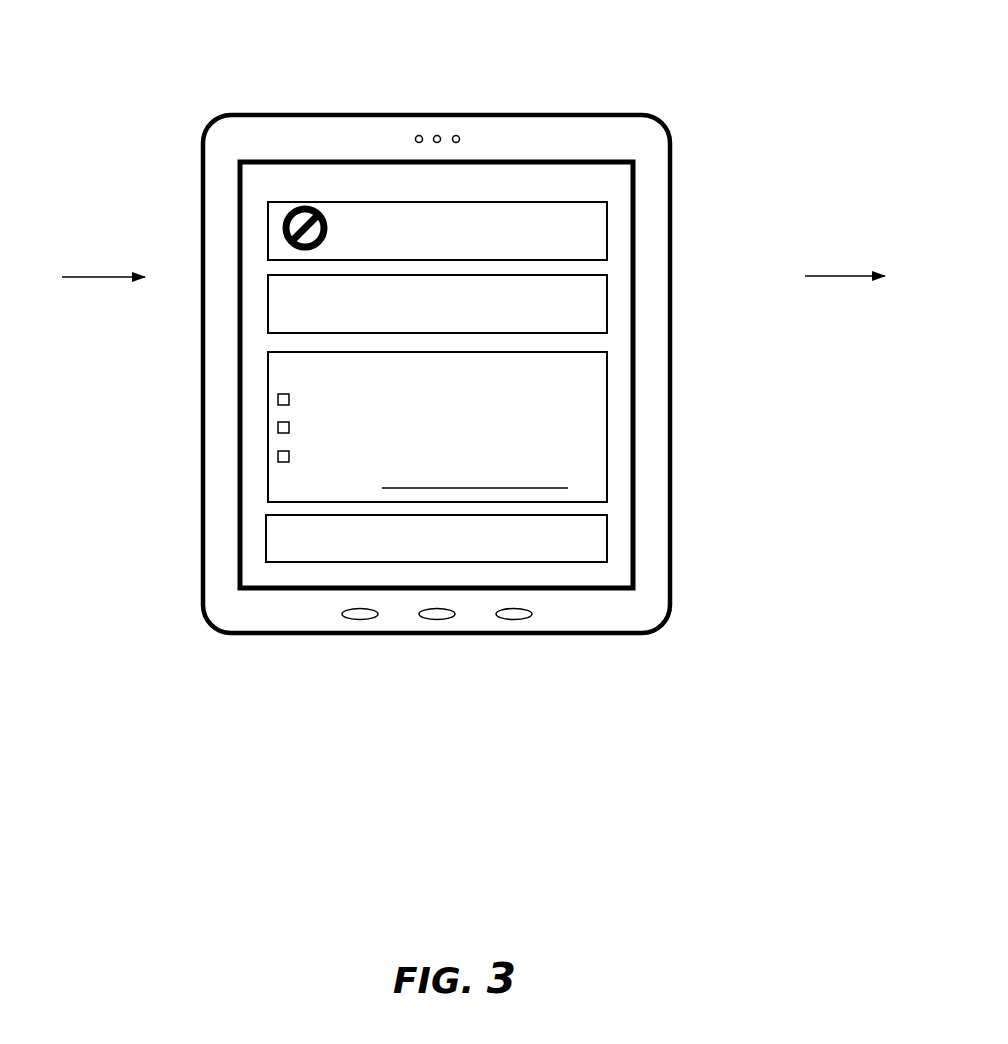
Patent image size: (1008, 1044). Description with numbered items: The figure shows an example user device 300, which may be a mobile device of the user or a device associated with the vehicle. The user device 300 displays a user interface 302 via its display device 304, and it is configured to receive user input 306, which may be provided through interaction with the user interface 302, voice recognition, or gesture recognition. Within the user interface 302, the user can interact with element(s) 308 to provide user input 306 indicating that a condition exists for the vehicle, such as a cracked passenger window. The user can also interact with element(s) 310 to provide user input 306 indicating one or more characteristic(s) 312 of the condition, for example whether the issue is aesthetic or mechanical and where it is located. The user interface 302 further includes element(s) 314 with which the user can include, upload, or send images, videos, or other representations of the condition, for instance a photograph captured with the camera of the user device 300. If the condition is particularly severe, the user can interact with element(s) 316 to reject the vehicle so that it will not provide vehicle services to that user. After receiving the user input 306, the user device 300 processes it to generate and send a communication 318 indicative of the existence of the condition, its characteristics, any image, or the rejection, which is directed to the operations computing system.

The user device 300 is at (340, 32).
The user interface 302 is at (612, 180).
The display device 304 is at (516, 158).
The user input 306 is at (98, 271).
The element(s) of the user interface for indicating a condition 308 is at (607, 297).
The element(s) of the user interface for condition characteristics 310 is at (268, 418).
The characteristic(s) of the condition 312 is at (438, 417).
The element(s) of the user interface for uploading images 314 is at (283, 563).
The element(s) of the user interface for rejecting the vehicle 316 is at (607, 243).
The communication 318 is at (840, 272).